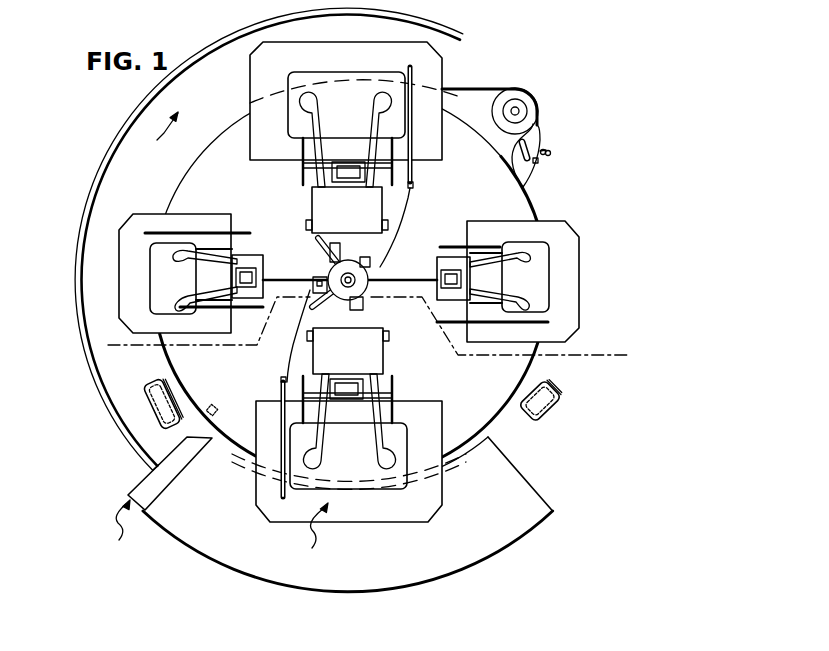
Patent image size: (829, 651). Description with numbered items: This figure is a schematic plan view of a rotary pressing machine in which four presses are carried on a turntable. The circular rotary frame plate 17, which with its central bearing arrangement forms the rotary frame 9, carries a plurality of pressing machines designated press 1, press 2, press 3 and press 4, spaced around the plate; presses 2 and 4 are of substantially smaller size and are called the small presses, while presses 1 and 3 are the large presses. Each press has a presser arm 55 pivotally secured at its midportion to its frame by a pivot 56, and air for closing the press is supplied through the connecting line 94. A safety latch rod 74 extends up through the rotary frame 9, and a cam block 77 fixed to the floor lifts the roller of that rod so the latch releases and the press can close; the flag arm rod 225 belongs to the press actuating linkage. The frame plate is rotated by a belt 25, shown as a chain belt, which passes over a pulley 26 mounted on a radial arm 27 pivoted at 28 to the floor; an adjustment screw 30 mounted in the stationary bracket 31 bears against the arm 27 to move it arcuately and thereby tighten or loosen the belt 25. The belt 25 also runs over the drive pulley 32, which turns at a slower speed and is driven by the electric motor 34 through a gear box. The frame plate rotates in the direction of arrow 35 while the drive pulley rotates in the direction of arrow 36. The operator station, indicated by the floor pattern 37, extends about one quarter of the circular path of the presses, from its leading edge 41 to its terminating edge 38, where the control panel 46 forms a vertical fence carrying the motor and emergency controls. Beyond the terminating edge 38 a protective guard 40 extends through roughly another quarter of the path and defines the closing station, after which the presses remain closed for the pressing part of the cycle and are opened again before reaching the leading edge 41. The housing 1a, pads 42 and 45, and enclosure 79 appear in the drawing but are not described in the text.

The large press 1 is at (317, 536).
The seat housing 1a is at (442, 492).
The small press 2 is at (121, 352).
The large press 3 is at (423, 61).
The small press 4 is at (176, 268).
The rotary frame 9 is at (245, 106).
The circular rotary frame plate 17 is at (238, 113).
The belt 25 is at (466, 91).
The pulley 26 is at (532, 146).
The radial arm 27 is at (521, 165).
The pivot 28 is at (536, 164).
The adjustment screw 30 is at (551, 154).
The stationary bracket 31 is at (542, 158).
The drive pulley 32 is at (541, 102).
The electric motor 34 is at (534, 111).
The arrow 35 is at (176, 133).
The arrow 36 is at (508, 114).
The operator station 37 is at (349, 593).
The terminating edge 38 is at (172, 480).
The protective guard 40 is at (78, 272).
The leading edge 41 is at (520, 482).
The cushion pad 42 is at (150, 406).
The cushion pad 45 is at (556, 410).
The control panel 46 is at (115, 530).
The presser arm 55 is at (225, 243).
The pivot 56 is at (352, 176).
The rod 74 is at (572, 281).
The cam block 77 is at (215, 406).
The seat housing 79 is at (296, 68).
The connecting line 94 is at (401, 278).
The flag arm rod 225 is at (401, 232).